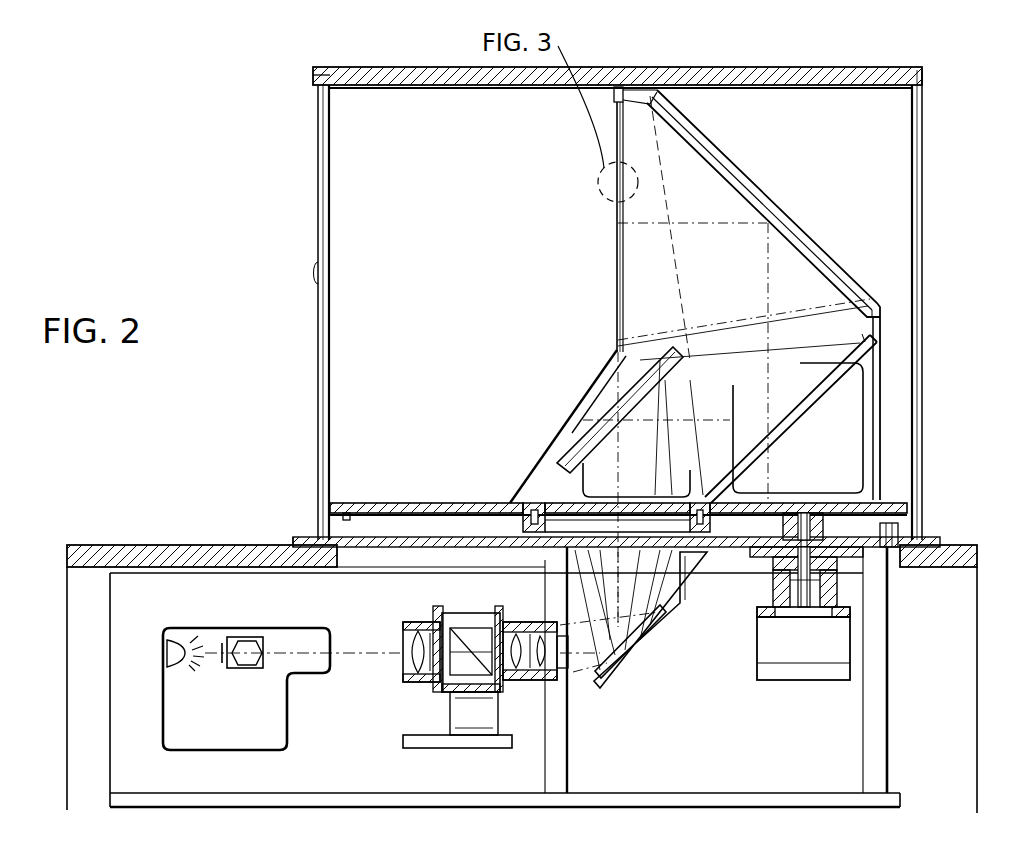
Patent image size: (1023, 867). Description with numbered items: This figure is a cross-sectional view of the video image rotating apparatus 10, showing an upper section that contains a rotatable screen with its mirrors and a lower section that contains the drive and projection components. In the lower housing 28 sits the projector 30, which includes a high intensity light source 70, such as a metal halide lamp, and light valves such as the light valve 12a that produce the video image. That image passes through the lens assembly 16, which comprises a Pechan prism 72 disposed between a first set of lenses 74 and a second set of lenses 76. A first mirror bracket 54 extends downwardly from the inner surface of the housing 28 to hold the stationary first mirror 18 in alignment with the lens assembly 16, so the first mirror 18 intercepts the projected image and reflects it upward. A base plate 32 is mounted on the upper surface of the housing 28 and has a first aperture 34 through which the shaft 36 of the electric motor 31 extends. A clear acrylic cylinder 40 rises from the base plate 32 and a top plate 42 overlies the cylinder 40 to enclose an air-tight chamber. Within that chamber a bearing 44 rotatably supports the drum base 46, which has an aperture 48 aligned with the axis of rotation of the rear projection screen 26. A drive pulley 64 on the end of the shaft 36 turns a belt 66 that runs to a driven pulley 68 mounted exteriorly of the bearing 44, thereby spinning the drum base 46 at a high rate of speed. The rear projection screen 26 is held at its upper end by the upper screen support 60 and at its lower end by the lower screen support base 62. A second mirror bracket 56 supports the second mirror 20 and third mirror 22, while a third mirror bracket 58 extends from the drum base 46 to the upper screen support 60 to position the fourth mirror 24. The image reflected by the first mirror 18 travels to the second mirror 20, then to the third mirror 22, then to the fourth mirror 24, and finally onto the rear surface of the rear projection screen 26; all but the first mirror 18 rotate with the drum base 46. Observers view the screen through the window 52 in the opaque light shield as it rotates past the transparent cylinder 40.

The video image rotating apparatus 10 is at (250, 138).
The light valve 12a is at (247, 668).
The lens assembly 16 is at (406, 708).
The first mirror 18 is at (622, 647).
The second mirror 20 is at (592, 456).
The third mirror 22 is at (838, 352).
The fourth mirror 24 is at (805, 260).
The rear projection screen 26 is at (617, 127).
The housing 28 is at (966, 544).
The projector 30 is at (164, 716).
The electric motor 31 is at (851, 650).
The base plate 32 is at (933, 540).
The first aperture 34 is at (830, 532).
The shaft 36 is at (780, 612).
The clear acrylic cylinder 40 is at (318, 213).
The top plate 42 is at (752, 67).
The bearing 44 is at (547, 505).
The drum base 46 is at (378, 503).
The aperture 48 is at (640, 495).
The window 52 is at (330, 279).
The first mirror bracket 54 is at (657, 630).
The second mirror bracket 56 is at (858, 398).
The third mirror bracket 58 is at (882, 302).
The upper screen support 60 is at (630, 87).
The lower screen support base 62 is at (587, 392).
The drive pulley 64 is at (780, 528).
The belt 66 is at (803, 560).
The driven pulley 68 is at (521, 530).
The high intensity light source 70 is at (177, 643).
The Pechan prism 72 is at (475, 626).
The first set of lenses 74 is at (421, 626).
The second set of lenses 76 is at (528, 682).